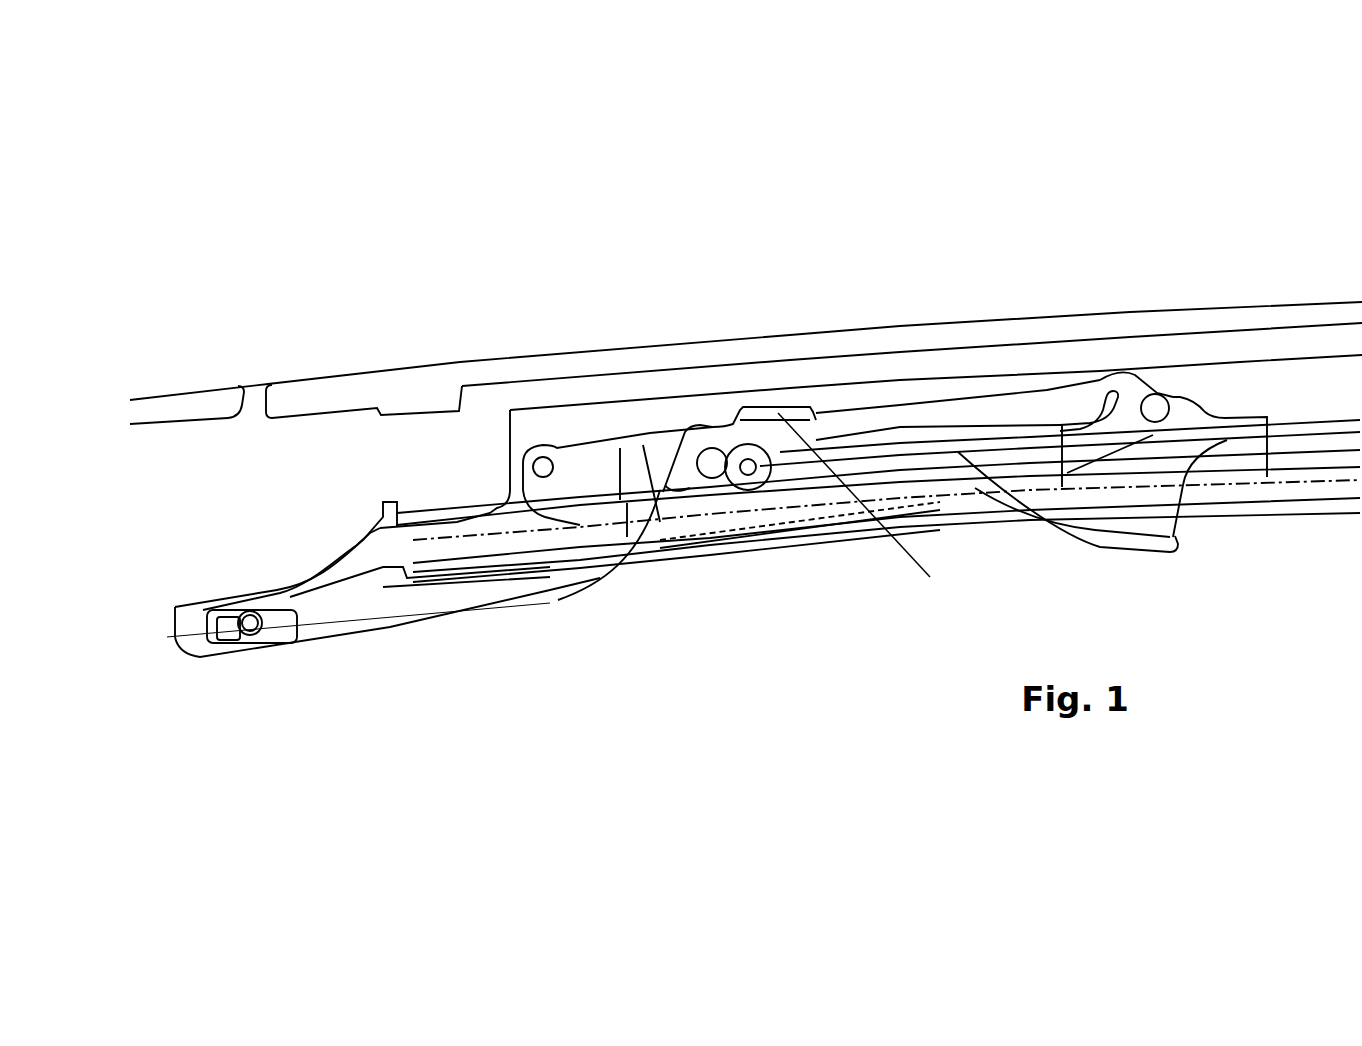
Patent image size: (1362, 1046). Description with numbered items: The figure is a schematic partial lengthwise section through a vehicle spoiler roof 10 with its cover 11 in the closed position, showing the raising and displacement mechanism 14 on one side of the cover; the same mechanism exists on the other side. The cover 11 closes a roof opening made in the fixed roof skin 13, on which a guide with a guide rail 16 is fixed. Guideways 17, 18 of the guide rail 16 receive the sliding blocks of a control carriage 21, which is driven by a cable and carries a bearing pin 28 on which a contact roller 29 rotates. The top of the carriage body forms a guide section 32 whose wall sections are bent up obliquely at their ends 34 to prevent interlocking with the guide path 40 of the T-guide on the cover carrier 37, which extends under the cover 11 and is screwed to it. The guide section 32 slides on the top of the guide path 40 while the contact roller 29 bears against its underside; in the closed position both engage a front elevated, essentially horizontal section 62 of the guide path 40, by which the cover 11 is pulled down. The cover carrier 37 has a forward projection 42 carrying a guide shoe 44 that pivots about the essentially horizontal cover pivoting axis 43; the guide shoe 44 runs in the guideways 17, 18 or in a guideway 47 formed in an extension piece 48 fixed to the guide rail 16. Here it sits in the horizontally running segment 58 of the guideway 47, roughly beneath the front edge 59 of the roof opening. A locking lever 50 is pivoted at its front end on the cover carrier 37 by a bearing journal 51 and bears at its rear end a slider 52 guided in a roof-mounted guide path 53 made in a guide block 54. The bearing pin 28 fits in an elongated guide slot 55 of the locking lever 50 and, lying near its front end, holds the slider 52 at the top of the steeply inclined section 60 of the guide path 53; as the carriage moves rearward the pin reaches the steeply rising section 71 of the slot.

The vehicle spoiler roof 10 is at (713, 293).
The cover 11 is at (1308, 316).
The fixed roof skin 13 is at (192, 400).
The raising and displacement mechanism 14 is at (685, 578).
The guide rail 16 is at (1348, 508).
The guideway 17 is at (533, 532).
The guideway 18 is at (878, 491).
The control carriage 21 is at (818, 498).
The bearing pin 28 is at (748, 472).
The contact roller 29 is at (742, 455).
The guide section 32 is at (866, 513).
The bent-up ends of the wall sections 34 is at (812, 412).
The cover carrier 37 is at (1208, 387).
The guide path 40 is at (1053, 535).
The projection 42 is at (435, 607).
The cover pivoting axis 43 is at (250, 625).
The guide shoe 44 is at (222, 635).
The guideway 47 is at (332, 587).
The extension piece 48 is at (352, 545).
The locking lever 50 is at (860, 422).
The bearing journal 51 is at (543, 462).
The slider 52 is at (1152, 400).
The roof-mounted guide path 53 is at (1208, 460).
The guide block 54 is at (1203, 425).
The elongated guide slot 55 is at (970, 445).
The horizontally running segment 58 is at (195, 620).
The front edge of the roof opening 59 is at (250, 420).
The inclined section of the guide path 60 is at (1167, 445).
The front elevated section of the guide path 62 is at (775, 433).
The steeply rising section of the guide slot 71 is at (1103, 403).